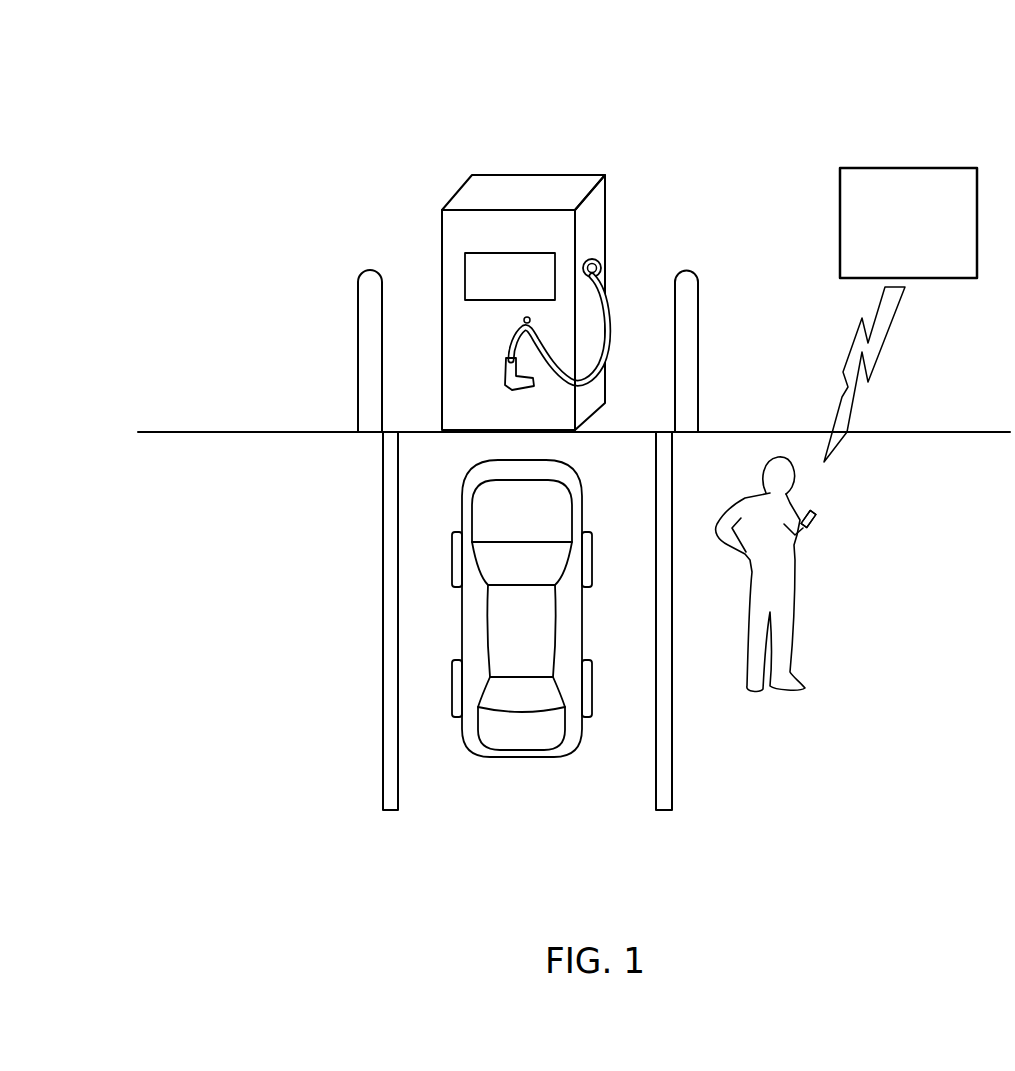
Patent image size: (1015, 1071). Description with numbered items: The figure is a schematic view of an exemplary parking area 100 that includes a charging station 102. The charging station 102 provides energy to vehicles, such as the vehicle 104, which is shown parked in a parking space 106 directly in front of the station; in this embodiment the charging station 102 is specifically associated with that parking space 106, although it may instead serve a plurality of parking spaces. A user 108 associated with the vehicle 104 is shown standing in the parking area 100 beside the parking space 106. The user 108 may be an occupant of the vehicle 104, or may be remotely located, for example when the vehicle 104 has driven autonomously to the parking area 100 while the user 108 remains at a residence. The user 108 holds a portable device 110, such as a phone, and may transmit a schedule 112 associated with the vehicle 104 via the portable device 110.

The parking area 100 is at (228, 90).
The charging station 102 is at (540, 205).
The vehicle 104 is at (539, 637).
The parking space 106 is at (660, 820).
The user 108 is at (747, 577).
The portable device 110 is at (818, 507).
The schedule 112 is at (891, 247).